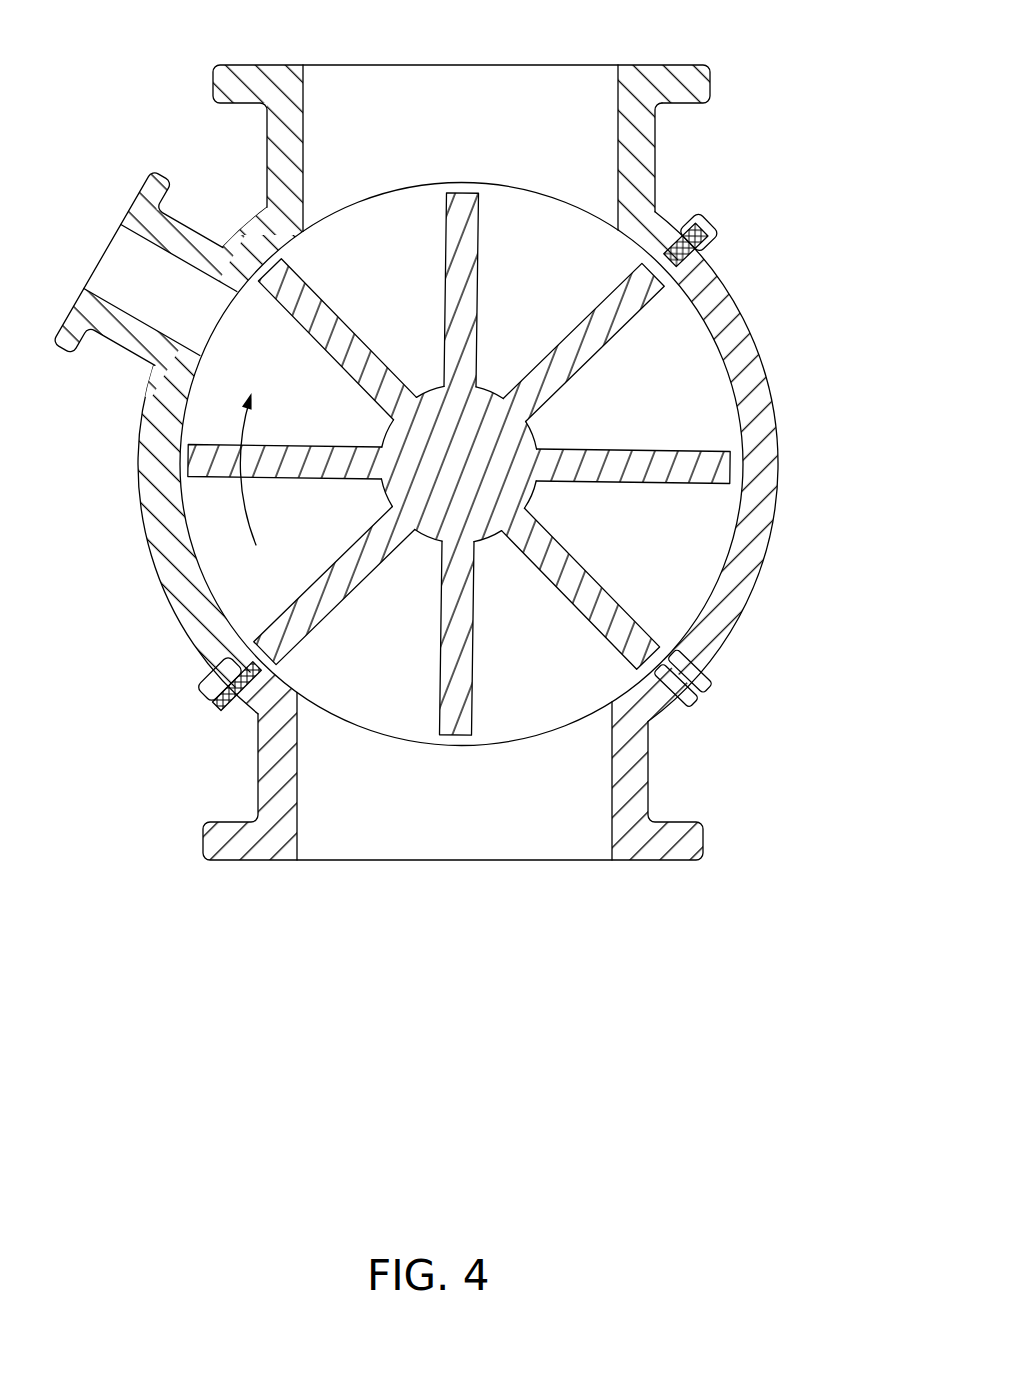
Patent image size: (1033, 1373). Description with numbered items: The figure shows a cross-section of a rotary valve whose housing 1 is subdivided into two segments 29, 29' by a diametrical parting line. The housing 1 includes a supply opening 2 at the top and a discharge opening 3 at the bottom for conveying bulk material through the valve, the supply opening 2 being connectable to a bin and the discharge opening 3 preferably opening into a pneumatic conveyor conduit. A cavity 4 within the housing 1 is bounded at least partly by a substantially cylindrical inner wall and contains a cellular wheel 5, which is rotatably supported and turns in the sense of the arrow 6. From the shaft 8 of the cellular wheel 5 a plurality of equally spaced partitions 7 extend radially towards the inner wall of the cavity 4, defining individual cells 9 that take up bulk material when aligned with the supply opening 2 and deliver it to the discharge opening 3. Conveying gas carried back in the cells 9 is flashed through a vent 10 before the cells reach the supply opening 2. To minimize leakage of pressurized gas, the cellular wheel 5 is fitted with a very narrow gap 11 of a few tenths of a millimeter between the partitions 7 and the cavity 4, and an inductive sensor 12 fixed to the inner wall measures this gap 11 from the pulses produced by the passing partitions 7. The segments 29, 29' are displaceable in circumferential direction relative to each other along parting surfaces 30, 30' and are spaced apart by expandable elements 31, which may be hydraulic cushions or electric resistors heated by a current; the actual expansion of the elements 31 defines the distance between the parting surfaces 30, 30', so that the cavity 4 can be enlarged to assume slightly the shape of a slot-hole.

The housing 1 is at (848, 402).
The supply opening 2 is at (517, 90).
The discharge opening 3 is at (556, 835).
The cavity 4 is at (716, 335).
The cellular wheel 5 is at (540, 433).
The arrow 6 is at (250, 525).
The partitions 7 is at (478, 300).
The shaft 8 is at (493, 530).
The cells 9 is at (394, 275).
The vent 10 is at (112, 263).
The gap 11 is at (185, 462).
The inductive sensor 12 is at (696, 700).
The segment 29 is at (758, 467).
The segment 29' is at (703, 147).
The parting surface 30 is at (730, 236).
The parting surface 30' is at (729, 192).
The expandable element 31 is at (222, 702).